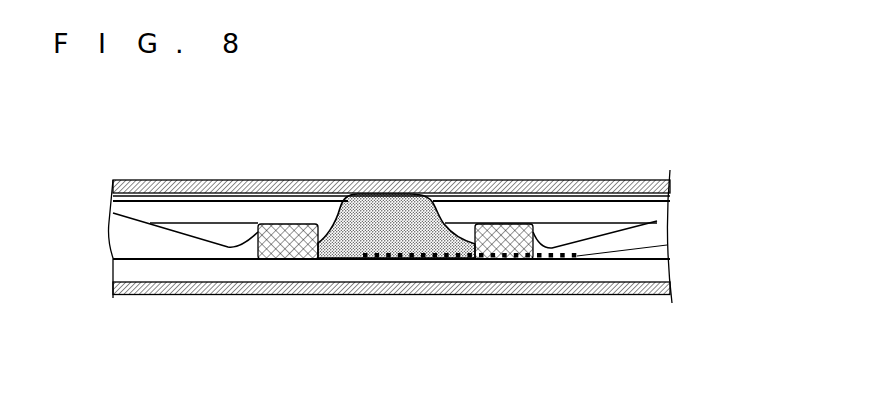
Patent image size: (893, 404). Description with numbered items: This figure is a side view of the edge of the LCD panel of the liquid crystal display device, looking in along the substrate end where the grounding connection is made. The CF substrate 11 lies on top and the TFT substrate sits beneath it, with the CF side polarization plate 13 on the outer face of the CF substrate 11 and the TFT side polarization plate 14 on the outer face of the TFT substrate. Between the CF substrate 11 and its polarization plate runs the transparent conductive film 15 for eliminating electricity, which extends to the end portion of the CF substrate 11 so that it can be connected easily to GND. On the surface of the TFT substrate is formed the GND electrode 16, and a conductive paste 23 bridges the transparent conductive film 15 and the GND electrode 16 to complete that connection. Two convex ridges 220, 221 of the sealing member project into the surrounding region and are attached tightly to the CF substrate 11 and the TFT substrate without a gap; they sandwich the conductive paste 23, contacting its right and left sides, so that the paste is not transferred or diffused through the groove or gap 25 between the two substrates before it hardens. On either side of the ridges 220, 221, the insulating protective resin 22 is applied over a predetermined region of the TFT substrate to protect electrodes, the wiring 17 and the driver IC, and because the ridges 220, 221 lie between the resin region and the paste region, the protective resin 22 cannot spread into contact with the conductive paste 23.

The CF substrate 11 is at (565, 205).
The CF side polarization plate 13 is at (588, 180).
The TFT side polarization plate 14 is at (613, 295).
The transparent conductive film 15 is at (670, 192).
The GND electrode 16 is at (388, 243).
The wiring 17 is at (665, 245).
The insulating protective resin 22 is at (123, 232).
The conductive paste 23 is at (390, 196).
The gap 25 is at (233, 235).
The ridge 220 is at (502, 245).
The ridge 221 is at (297, 247).